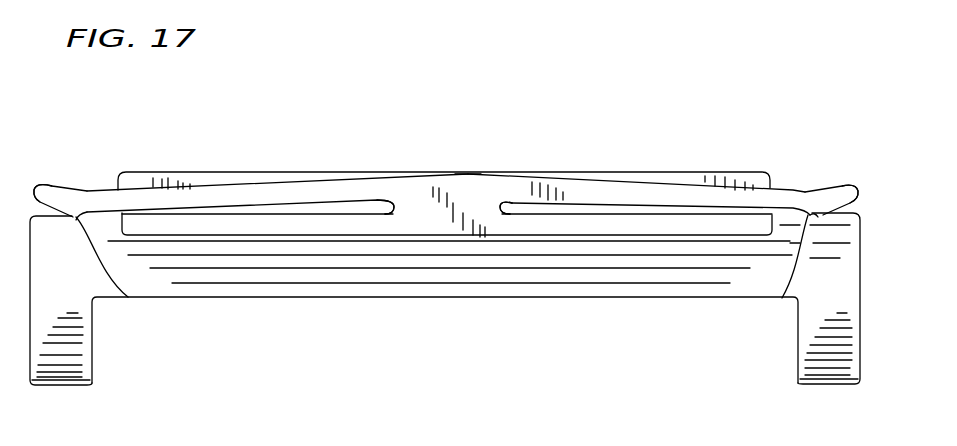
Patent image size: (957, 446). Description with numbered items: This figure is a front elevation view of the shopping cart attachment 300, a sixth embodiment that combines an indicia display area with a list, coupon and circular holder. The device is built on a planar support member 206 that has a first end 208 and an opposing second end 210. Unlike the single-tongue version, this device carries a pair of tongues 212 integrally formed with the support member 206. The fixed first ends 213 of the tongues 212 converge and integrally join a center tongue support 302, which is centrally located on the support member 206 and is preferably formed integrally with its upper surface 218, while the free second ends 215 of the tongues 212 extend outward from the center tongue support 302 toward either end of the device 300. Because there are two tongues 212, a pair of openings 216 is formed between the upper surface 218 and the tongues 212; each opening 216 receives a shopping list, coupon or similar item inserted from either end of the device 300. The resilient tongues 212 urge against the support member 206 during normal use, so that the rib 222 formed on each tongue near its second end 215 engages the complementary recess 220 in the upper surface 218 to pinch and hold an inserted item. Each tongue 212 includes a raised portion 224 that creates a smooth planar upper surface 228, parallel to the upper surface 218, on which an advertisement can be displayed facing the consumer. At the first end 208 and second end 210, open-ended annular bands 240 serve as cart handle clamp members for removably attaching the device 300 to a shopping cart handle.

The shopping cart attachment 300 is at (477, 95).
The support member 206 is at (420, 286).
The first end 208 is at (100, 300).
The second end 210 is at (793, 300).
The tongue 212 is at (110, 190).
The fixed first end 213 is at (503, 200).
The free second end 215 is at (36, 180).
The opening 216 is at (385, 192).
The upper surface 218 is at (597, 213).
The recess 220 is at (125, 298).
The rib 222 is at (74, 214).
The raised portion 224 is at (197, 173).
The planar upper surface 228 is at (468, 172).
The annular band 240 is at (70, 367).
The center tongue support 302 is at (427, 187).